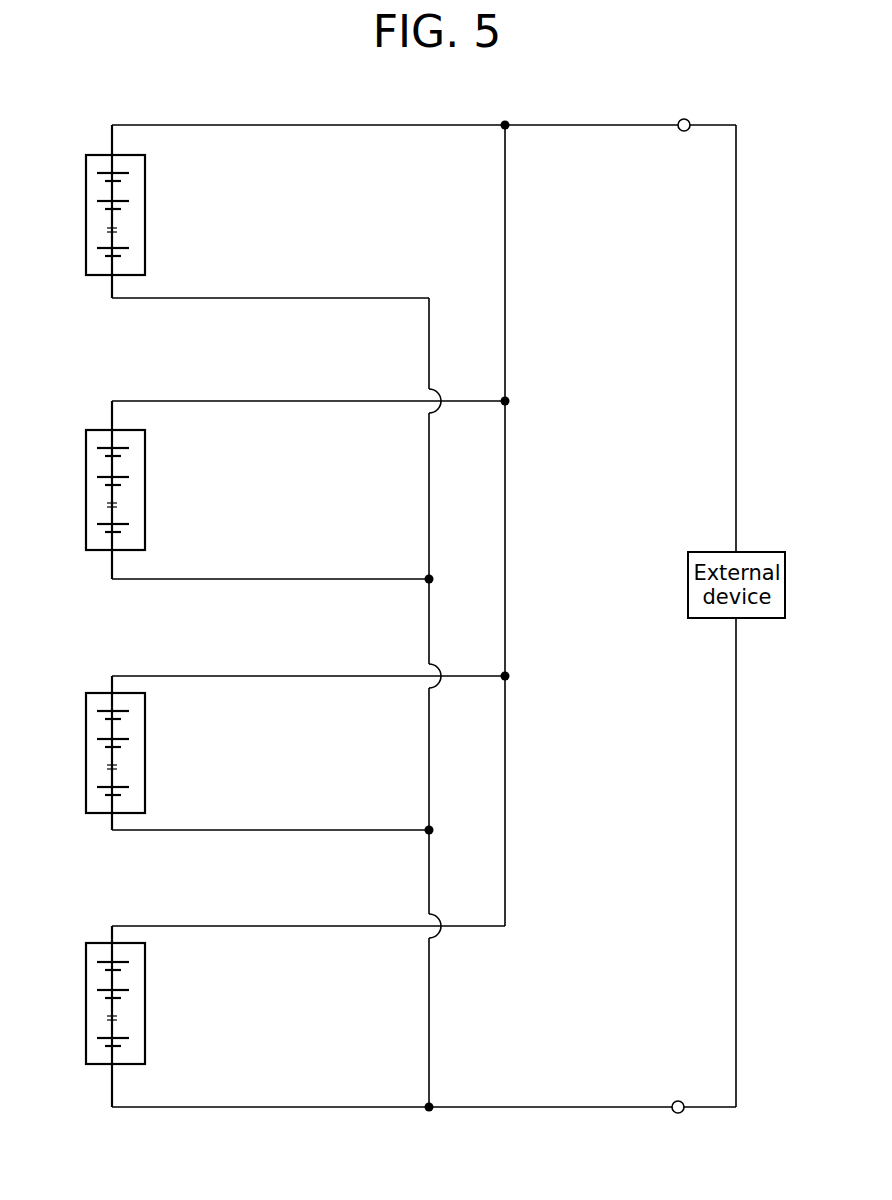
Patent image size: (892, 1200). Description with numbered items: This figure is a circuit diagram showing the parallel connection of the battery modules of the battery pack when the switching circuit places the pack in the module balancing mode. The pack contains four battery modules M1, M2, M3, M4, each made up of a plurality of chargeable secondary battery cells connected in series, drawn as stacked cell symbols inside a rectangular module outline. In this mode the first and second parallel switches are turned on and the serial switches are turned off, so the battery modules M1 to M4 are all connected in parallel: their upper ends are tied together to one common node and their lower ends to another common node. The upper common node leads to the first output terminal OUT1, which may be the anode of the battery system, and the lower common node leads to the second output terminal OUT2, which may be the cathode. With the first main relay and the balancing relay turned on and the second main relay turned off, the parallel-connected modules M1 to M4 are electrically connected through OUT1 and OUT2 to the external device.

The battery module M1 is at (135, 211).
The battery module M2 is at (135, 490).
The battery module M3 is at (135, 753).
The battery module M4 is at (135, 1016).
The first output terminal OUT1 is at (687, 144).
The second output terminal OUT2 is at (681, 1126).